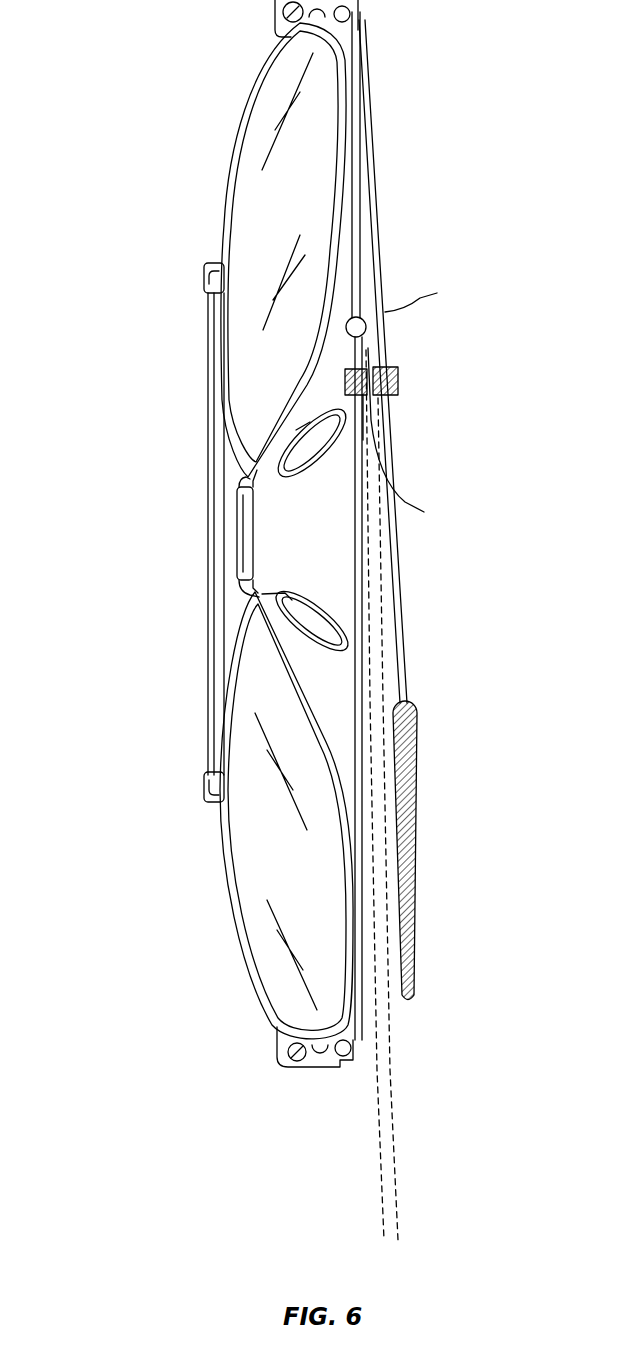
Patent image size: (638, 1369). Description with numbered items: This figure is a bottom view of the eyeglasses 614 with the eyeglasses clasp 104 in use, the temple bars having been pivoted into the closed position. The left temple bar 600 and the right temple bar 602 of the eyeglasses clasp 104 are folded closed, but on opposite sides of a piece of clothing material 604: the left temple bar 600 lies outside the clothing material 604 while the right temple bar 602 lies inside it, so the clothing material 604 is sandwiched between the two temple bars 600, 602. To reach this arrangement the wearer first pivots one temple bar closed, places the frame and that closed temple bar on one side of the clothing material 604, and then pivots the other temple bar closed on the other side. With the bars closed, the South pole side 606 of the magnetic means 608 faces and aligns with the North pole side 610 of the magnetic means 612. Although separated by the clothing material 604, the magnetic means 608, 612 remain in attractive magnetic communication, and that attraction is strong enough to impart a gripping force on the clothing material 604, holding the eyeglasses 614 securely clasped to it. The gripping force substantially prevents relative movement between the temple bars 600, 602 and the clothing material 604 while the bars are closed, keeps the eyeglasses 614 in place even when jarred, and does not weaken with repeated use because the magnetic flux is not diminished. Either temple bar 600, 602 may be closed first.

The eyeglasses clasp 104 is at (186, 364).
The left temple bar 600 is at (434, 296).
The right temple bar 602 is at (363, 833).
The clothing material 604 is at (392, 1099).
The South pole side 606 is at (363, 443).
The magnetic means 608 is at (401, 380).
The North pole side 610 is at (380, 342).
The magnetic means 612 is at (420, 440).
The eyeglasses 614 is at (318, 142).